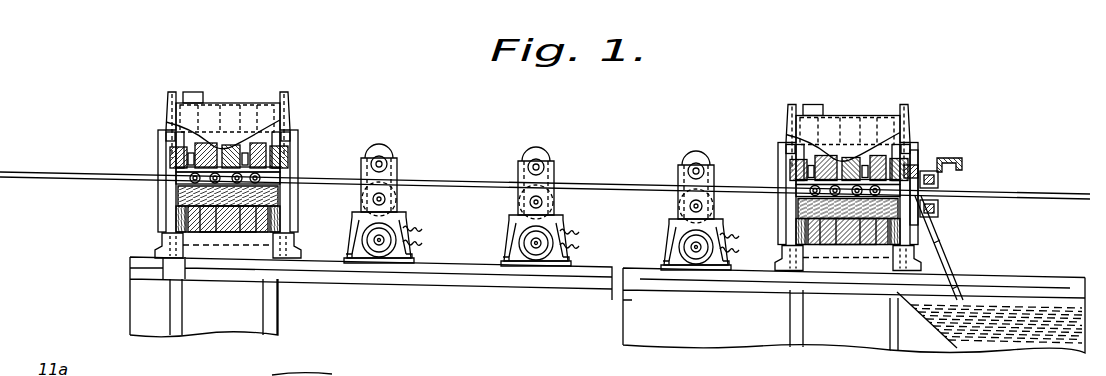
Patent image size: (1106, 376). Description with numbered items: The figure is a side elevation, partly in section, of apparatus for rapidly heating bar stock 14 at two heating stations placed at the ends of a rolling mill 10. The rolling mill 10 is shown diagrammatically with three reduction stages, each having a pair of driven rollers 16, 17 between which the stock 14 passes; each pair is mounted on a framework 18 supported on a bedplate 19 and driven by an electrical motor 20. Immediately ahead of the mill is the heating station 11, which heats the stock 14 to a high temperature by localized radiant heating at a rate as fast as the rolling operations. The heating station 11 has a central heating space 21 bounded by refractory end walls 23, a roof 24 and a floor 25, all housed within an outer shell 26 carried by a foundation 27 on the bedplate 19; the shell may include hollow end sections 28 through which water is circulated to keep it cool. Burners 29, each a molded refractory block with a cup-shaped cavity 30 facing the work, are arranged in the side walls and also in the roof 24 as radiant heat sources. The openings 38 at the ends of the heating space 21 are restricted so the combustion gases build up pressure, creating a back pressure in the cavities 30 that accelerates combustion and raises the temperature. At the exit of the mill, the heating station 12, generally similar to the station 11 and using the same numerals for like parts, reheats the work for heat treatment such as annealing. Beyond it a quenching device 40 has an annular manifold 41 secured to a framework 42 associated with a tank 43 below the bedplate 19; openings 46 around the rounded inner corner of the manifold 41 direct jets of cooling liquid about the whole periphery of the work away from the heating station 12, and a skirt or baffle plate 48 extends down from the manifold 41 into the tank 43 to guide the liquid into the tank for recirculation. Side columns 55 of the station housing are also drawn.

The rolling mill 10 is at (396, 131).
The heating station 11 is at (188, 76).
The heating station 12 is at (848, 92).
The bar stock 14 is at (33, 172).
The driven roller 16 is at (393, 157).
The driven roller 17 is at (398, 200).
The framework 18 is at (558, 221).
The bedplate 19 is at (472, 268).
The electrical motor 20 is at (362, 240).
The heating space 21 is at (217, 182).
The end walls 23 is at (173, 158).
The roof 24 is at (222, 140).
The floor 25 is at (224, 197).
The outer shell 26 is at (170, 101).
The foundation 27 is at (158, 239).
The hollow end sections 28 is at (176, 140).
The burners 29 is at (198, 150).
The cavity 30 is at (176, 185).
The openings 38 is at (167, 172).
The quenching device 40 is at (983, 169).
The manifold 41 is at (940, 180).
The framework 42 is at (962, 159).
The tank 43 is at (943, 341).
The openings 46 is at (941, 207).
The baffle plate 48 is at (949, 256).
The side column 55 is at (170, 199).